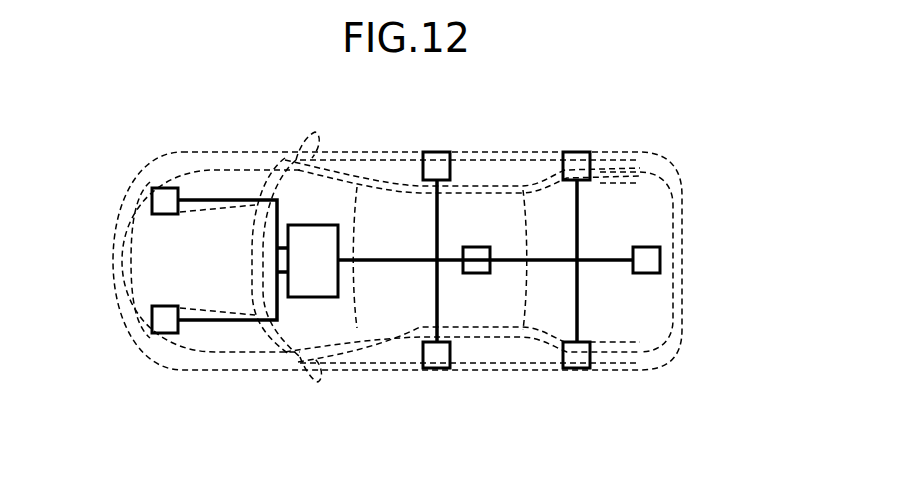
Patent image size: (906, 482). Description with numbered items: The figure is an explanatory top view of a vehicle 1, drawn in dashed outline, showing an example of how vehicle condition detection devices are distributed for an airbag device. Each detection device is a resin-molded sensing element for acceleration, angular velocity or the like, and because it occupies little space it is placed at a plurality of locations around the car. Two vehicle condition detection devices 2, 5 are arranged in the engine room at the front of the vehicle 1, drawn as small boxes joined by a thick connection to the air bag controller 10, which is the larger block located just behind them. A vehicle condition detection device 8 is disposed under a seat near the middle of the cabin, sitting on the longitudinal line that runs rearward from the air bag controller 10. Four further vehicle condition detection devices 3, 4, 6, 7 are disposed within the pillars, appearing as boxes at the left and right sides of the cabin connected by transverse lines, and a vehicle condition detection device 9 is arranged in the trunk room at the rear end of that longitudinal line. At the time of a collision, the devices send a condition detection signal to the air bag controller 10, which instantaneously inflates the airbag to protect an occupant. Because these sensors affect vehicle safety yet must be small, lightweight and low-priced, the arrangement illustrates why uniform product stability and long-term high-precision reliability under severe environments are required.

The vehicle 1 is at (657, 160).
The vehicle condition detection device 2 is at (168, 197).
The vehicle condition detection device 3 is at (437, 165).
The vehicle condition detection device 4 is at (577, 165).
The vehicle condition detection device 5 is at (168, 322).
The vehicle condition detection device 6 is at (437, 362).
The vehicle condition detection device 7 is at (577, 362).
The vehicle condition detection device 8 is at (478, 268).
The vehicle condition detection device 9 is at (650, 265).
The air bag controller 10 is at (318, 283).